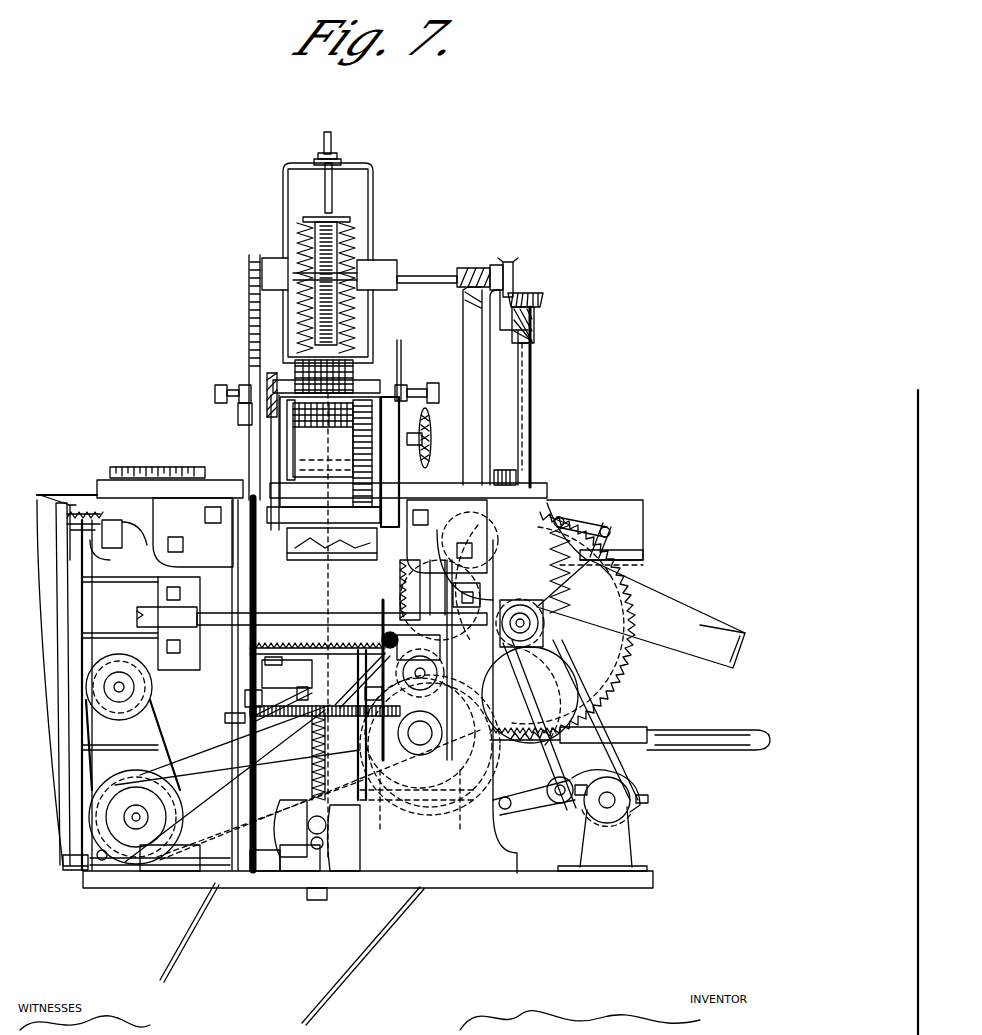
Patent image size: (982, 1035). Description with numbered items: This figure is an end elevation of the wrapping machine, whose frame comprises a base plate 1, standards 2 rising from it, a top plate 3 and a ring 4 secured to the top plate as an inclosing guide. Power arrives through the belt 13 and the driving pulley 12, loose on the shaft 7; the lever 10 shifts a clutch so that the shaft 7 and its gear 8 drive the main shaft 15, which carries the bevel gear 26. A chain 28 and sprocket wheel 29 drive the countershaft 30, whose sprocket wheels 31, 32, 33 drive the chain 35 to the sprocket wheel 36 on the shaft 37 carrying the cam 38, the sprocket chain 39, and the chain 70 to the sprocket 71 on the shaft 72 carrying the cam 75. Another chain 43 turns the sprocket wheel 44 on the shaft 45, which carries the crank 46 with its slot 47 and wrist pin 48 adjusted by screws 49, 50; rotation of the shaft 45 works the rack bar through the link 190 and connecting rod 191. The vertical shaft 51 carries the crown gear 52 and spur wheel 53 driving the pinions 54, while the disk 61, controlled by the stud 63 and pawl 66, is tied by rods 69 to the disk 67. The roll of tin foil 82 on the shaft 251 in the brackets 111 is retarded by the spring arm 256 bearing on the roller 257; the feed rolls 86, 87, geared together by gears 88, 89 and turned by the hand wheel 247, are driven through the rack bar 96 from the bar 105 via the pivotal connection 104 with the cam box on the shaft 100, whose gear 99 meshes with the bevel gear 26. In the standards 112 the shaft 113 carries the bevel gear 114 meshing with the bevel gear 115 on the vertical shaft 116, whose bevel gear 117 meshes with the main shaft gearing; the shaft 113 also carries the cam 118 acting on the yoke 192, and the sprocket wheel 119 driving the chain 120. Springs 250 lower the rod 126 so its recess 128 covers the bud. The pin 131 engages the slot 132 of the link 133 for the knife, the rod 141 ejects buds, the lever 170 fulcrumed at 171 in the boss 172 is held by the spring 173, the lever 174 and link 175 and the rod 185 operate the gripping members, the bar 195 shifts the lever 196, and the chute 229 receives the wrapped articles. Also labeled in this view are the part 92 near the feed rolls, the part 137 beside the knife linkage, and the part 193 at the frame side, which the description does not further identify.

The base plate 1 is at (508, 892).
The standards 2 is at (527, 860).
The top plate 3 is at (103, 482).
The ring 4 is at (167, 475).
The shaft 7 is at (450, 717).
The gear 8 is at (400, 757).
The lever 10 is at (717, 742).
The driving pulley 12 is at (377, 860).
The belt 13 is at (350, 970).
The main shaft 15 is at (537, 700).
The bevel gear 26 is at (546, 693).
The chain 28 is at (230, 715).
The sprocket wheel 29 is at (173, 807).
The countershaft 30 is at (133, 817).
The sprocket wheel 31 is at (170, 784).
The sprocket wheel 32 is at (172, 873).
The sprocket wheel 33 is at (130, 793).
The chain 35 is at (225, 777).
The sprocket wheel 36 is at (297, 873).
The shaft 37 is at (270, 872).
The cam 38 is at (317, 892).
The sprocket chain 39 is at (210, 873).
The chain 43 is at (603, 730).
The sprocket wheel 44 is at (613, 780).
The shaft 45 is at (607, 812).
The crank 46 is at (572, 785).
The slot 47 is at (580, 795).
The wrist pin 48 is at (548, 800).
The screw 49 is at (512, 787).
The screw 50 is at (640, 803).
The shaft 51 is at (313, 585).
The crown gear 52 is at (333, 860).
The spur wheel 53 is at (240, 695).
The pinion 54 is at (287, 707).
The disk 61 is at (283, 643).
The stud 63 is at (380, 607).
The pawl 66 is at (273, 660).
The disk 67 is at (250, 732).
The rods 69 is at (247, 677).
The chain 70 is at (100, 760).
The sprocket 71 is at (110, 722).
The shaft 72 is at (121, 690).
The cam 75 is at (106, 660).
The roll of tin foil 82 is at (343, 357).
The feed roll 86 is at (290, 438).
The feed roll 87 is at (293, 483).
The gear 88 is at (367, 433).
The gear 89 is at (360, 550).
The knob 92 is at (420, 420).
The rack bar 96 is at (237, 411).
The gear 99 is at (470, 540).
The shaft 100 is at (212, 615).
The pivotal connection 104 is at (223, 620).
The bar 105 is at (242, 527).
The brackets 111 is at (260, 457).
The standards 112 is at (277, 300).
The shaft 113 is at (427, 277).
The bevel gear 114 is at (508, 263).
The bevel gear 115 is at (533, 297).
The vertical shaft 116 is at (523, 412).
The bevel gear 117 is at (522, 605).
The cam 118 is at (327, 233).
The sprocket wheel 119 is at (248, 257).
The chain 120 is at (250, 326).
The rod 126 is at (380, 350).
The recess 128 is at (640, 640).
The pin 131 is at (395, 630).
The slot 132 is at (425, 575).
The link 133 is at (393, 593).
The arm 137 is at (573, 650).
The rod 141 is at (617, 663).
The lever 170 is at (92, 535).
The fulcrum 171 is at (122, 538).
The boss 172 is at (120, 522).
The spring 173 is at (117, 523).
The lever 174 is at (608, 533).
The link 175 is at (580, 520).
The rod 185 is at (610, 555).
The link 190 is at (480, 888).
The connecting rod 191 is at (433, 803).
The yoke 192 is at (340, 222).
The arm 193 is at (73, 747).
The bar 195 is at (300, 897).
The lever 196 is at (300, 760).
The chute 229 is at (685, 623).
The hand wheel 247 is at (420, 455).
The springs 250 is at (308, 237).
The shaft 251 is at (403, 362).
The spring arm 256 is at (256, 345).
The roller 257 is at (268, 370).